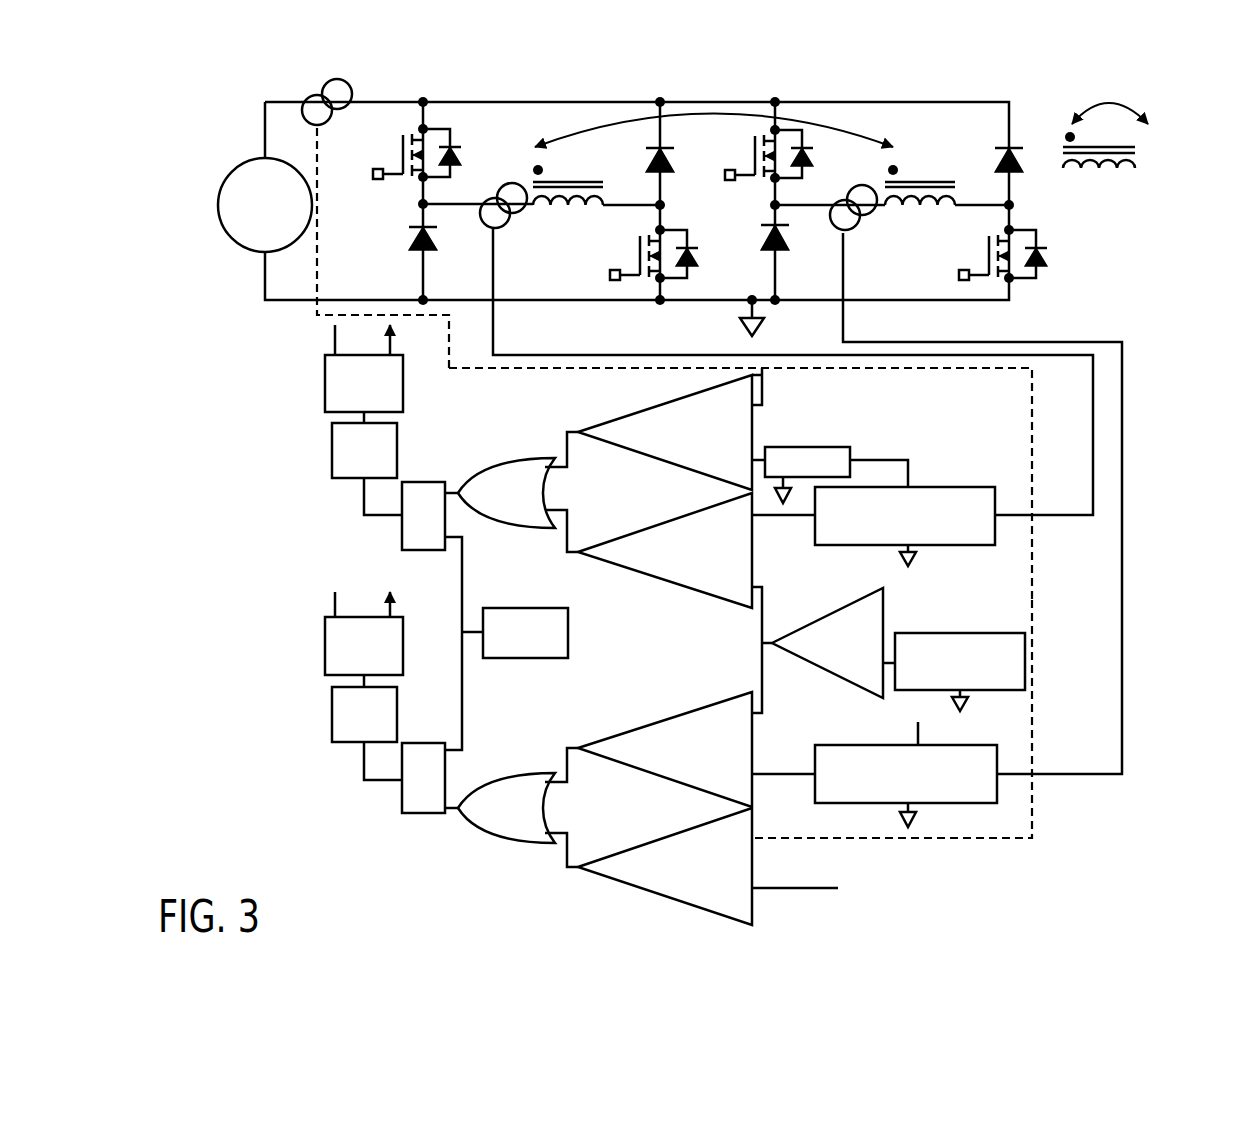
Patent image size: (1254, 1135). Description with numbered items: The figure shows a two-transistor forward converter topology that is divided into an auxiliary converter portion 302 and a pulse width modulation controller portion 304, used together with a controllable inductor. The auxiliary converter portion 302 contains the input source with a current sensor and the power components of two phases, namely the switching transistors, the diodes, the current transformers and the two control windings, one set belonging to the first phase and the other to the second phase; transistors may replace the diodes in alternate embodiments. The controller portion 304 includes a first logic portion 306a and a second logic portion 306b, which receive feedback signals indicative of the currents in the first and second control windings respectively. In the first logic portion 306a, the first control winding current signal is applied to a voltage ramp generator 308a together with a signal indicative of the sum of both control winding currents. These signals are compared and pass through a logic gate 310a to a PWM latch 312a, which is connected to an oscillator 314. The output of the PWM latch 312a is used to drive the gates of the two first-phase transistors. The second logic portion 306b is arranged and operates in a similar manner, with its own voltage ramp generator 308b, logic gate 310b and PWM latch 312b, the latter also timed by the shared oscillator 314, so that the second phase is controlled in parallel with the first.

The auxiliary converter portion 302 is at (232, 99).
The pulse width modulation controller portion 304 is at (1147, 410).
The first logic portion 306a is at (1042, 442).
The second logic portion 306b is at (1042, 710).
The voltage ramp generator 308a is at (985, 487).
The voltage ramp generator 308b is at (830, 745).
The logic gate 310a is at (512, 458).
The logic gate 310b is at (512, 773).
The PWM latch 312a is at (422, 482).
The PWM latch 312b is at (422, 743).
The oscillator 314 is at (525, 608).